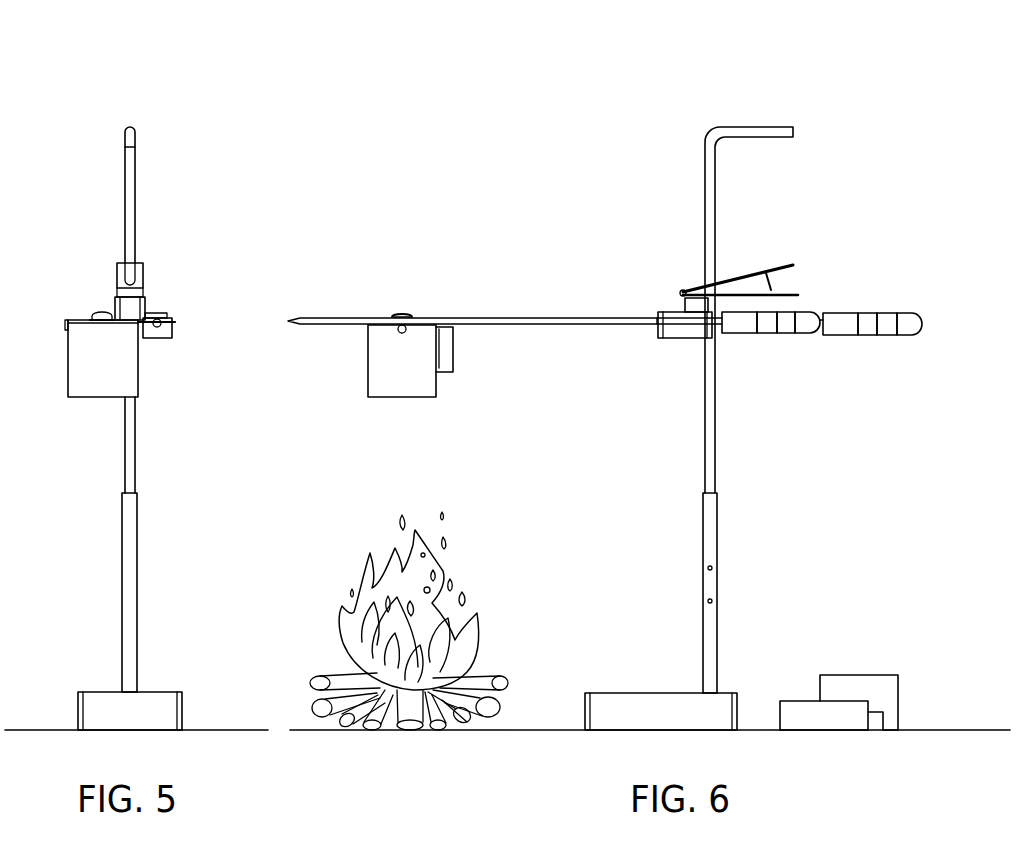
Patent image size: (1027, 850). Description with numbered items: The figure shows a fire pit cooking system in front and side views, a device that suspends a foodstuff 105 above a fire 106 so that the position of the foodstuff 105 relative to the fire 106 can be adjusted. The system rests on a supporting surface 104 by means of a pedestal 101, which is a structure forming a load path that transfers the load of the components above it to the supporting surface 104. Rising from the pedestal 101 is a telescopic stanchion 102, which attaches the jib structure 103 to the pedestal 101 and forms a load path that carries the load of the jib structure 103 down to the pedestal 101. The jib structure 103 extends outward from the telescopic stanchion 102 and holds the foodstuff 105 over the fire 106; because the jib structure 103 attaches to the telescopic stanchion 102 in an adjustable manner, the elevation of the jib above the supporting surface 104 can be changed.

In FIG. 5, the pedestal 101 is at (153, 690).
In FIG. 6, the pedestal 101 is at (643, 693).
In FIG. 5, the telescopic stanchion 102 is at (135, 160).
In FIG. 6, the telescopic stanchion 102 is at (722, 528).
In FIG. 5, the jib structure 103 is at (140, 270).
In FIG. 6, the jib structure 103 is at (557, 315).
In FIG. 5, the supporting surface 104 is at (30, 732).
In FIG. 6, the foodstuff 105 is at (840, 675).
In FIG. 6, the fire 106 is at (440, 563).